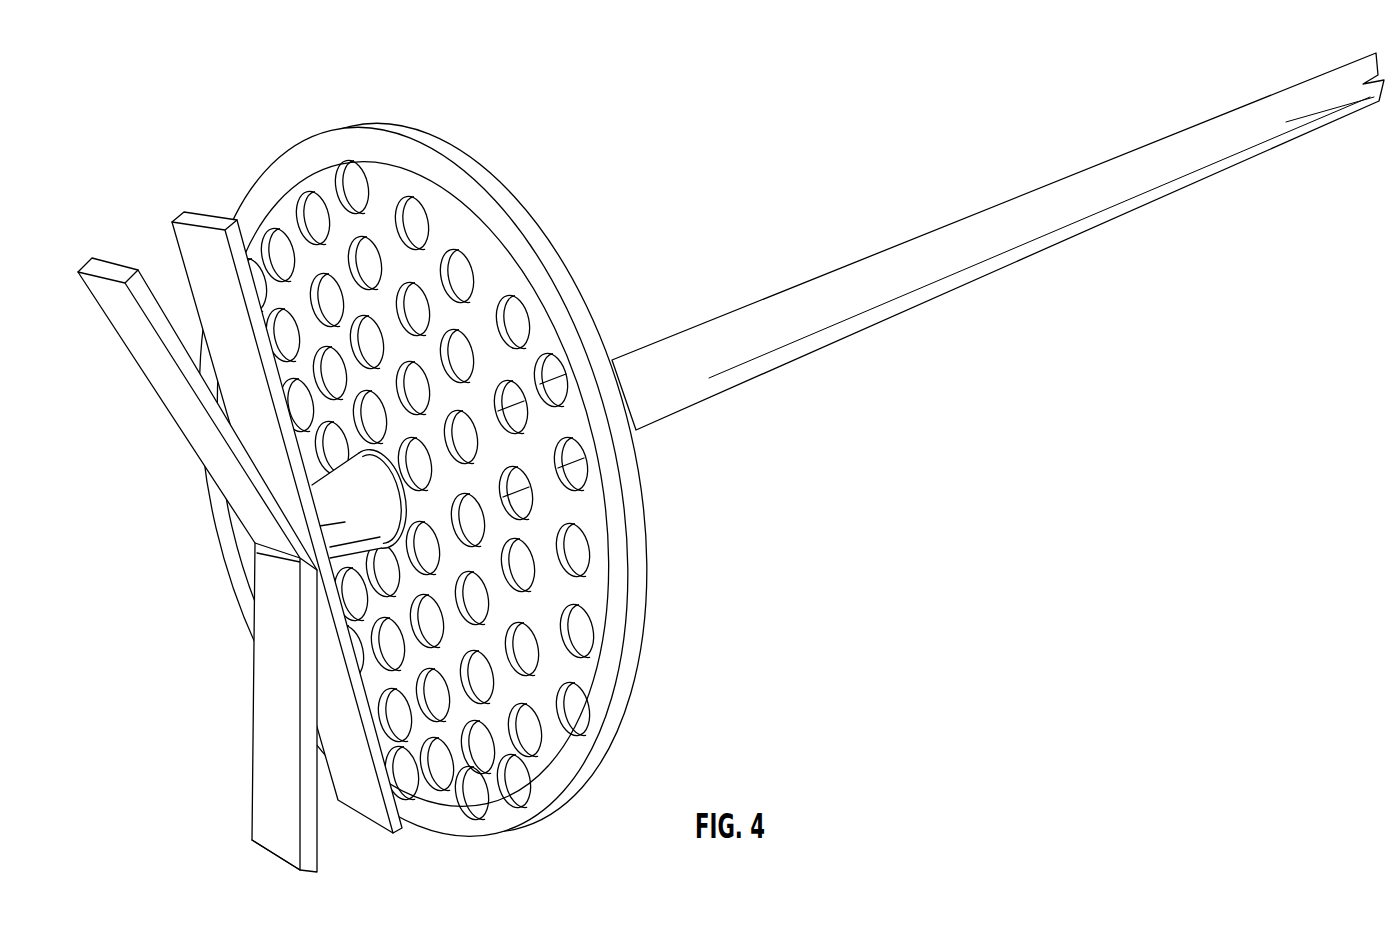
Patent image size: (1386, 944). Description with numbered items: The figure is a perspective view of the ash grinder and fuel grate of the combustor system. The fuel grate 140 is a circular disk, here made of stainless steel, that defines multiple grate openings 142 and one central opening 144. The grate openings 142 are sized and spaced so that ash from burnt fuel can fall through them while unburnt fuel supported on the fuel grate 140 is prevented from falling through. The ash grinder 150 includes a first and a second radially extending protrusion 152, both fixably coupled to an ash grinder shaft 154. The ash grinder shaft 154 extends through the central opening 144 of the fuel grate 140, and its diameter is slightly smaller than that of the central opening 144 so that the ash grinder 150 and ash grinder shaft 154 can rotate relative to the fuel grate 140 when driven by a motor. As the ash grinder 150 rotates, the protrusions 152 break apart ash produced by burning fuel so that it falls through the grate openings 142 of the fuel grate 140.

The fuel grate 140 is at (297, 142).
The grate openings 142 is at (523, 297).
The central opening 144 is at (400, 520).
The ash grinder 150 is at (731, 464).
The radially extending protrusions 152 is at (368, 802).
The ash grinder shaft 154 is at (861, 313).